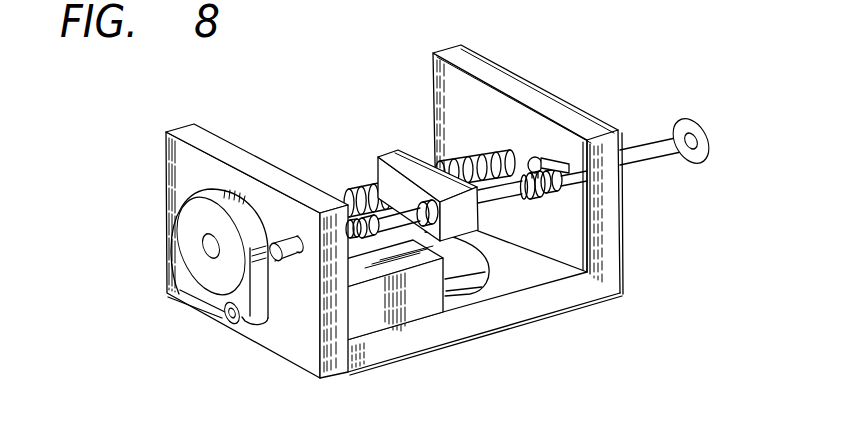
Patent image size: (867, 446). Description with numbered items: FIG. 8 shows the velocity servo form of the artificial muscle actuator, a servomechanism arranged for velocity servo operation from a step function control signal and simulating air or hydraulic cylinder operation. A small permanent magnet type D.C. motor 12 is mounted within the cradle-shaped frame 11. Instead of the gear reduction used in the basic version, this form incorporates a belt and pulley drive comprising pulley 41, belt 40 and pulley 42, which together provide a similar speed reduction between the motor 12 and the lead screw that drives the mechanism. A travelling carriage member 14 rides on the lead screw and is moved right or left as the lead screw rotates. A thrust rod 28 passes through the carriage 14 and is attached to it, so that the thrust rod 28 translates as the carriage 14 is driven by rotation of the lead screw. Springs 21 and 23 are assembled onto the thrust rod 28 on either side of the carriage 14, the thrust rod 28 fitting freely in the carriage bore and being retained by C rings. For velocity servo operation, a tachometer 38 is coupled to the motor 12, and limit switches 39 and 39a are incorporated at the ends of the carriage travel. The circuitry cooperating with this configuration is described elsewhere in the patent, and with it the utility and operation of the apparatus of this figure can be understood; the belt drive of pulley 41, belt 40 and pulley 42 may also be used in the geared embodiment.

The cradle-shaped frame 11 is at (290, 337).
The motor 12 is at (418, 303).
The travelling carriage member 14 is at (408, 158).
The spring 21 is at (356, 220).
The spring 23 is at (548, 191).
The thrust rod 28 is at (655, 142).
The tachometer 38 is at (473, 290).
The limit switch 39 is at (352, 215).
The limit switch 39a is at (533, 160).
The belt 40 is at (168, 293).
The pulley 41 is at (228, 320).
The pulley 42 is at (187, 233).